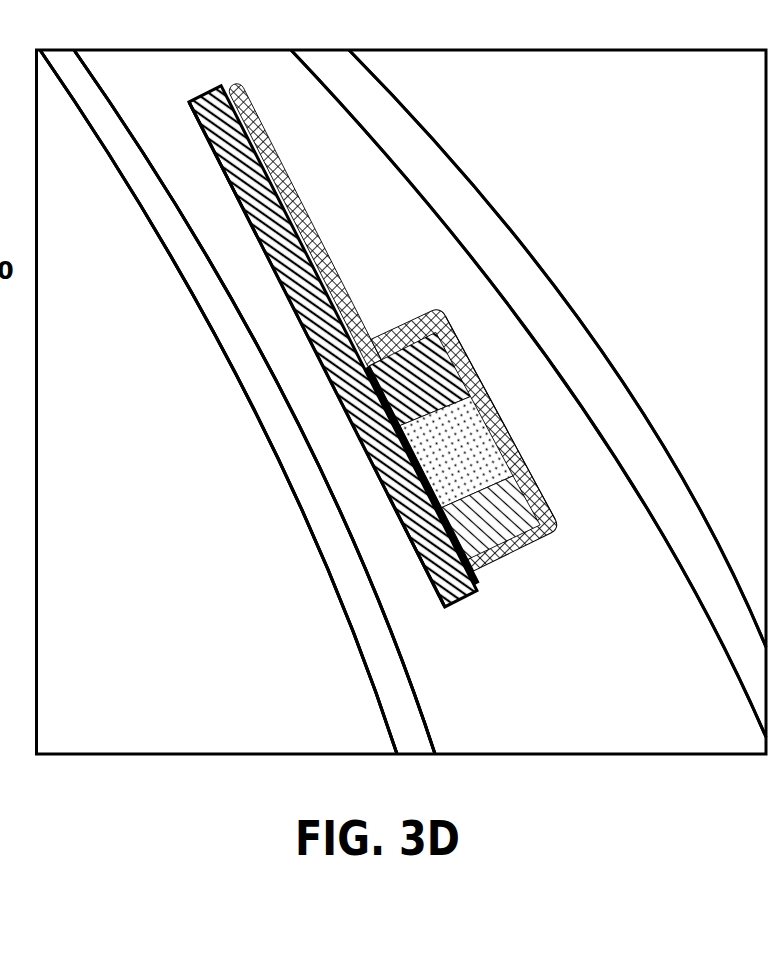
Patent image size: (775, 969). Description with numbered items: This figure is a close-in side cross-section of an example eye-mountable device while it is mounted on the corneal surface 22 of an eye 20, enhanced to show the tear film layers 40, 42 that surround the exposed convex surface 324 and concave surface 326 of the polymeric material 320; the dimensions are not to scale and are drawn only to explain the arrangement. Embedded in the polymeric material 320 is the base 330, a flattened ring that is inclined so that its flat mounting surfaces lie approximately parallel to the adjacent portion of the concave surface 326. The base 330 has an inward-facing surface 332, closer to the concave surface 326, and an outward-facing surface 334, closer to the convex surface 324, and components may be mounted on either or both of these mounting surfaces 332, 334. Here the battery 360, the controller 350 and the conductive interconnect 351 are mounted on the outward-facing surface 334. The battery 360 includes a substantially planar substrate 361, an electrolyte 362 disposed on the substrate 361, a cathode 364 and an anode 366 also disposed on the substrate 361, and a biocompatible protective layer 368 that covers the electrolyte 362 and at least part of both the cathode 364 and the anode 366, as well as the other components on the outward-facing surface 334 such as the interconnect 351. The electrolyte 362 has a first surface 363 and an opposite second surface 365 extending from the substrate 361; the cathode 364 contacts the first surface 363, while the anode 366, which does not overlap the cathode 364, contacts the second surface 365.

The substrate 20 is at (127, 726).
The corneal surface 22 is at (388, 713).
The tear film layer 40 is at (380, 657).
The tear film layer 42 is at (481, 222).
The polymeric material 320 is at (673, 726).
The convex surface 324 is at (383, 172).
The concave surface 326 is at (358, 558).
The base 330 is at (213, 158).
The inward-facing surface 332 is at (193, 127).
The outward-facing surface 334 is at (243, 103).
The controller 350 is at (244, 218).
The conductive interconnect 351 is at (323, 373).
The battery 360 is at (519, 364).
The substrate 361 is at (420, 312).
The electrolyte 362 is at (437, 507).
The first surface 363 is at (450, 458).
The cathode 364 is at (424, 420).
The second surface 365 is at (434, 588).
The anode 366 is at (480, 500).
The biocompatible protective layer 368 is at (540, 462).